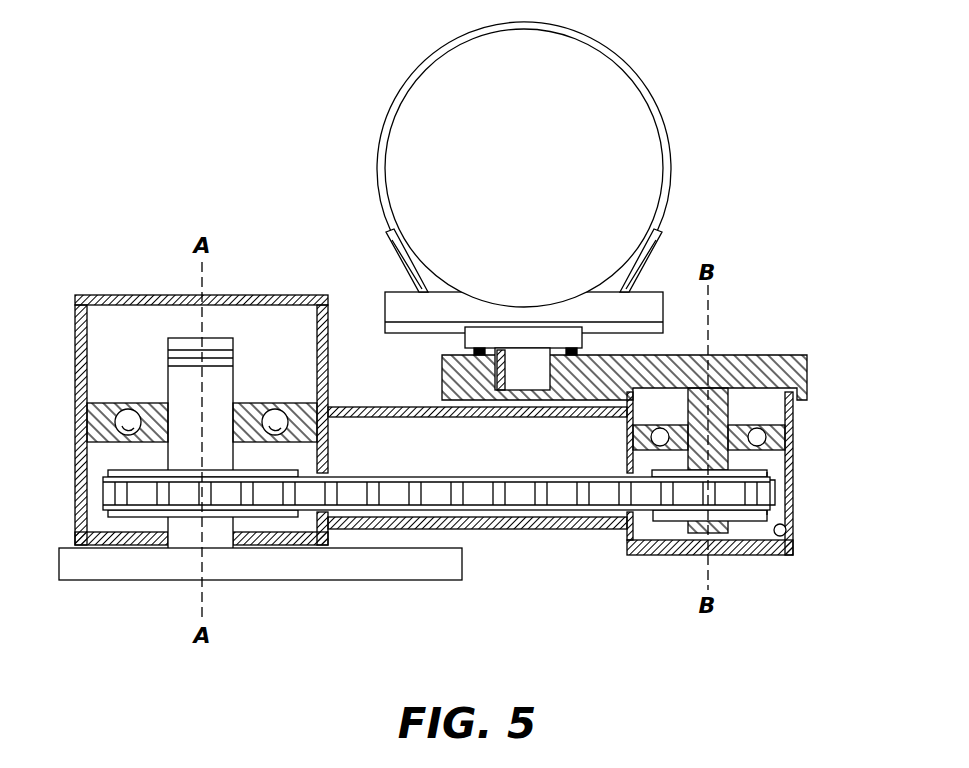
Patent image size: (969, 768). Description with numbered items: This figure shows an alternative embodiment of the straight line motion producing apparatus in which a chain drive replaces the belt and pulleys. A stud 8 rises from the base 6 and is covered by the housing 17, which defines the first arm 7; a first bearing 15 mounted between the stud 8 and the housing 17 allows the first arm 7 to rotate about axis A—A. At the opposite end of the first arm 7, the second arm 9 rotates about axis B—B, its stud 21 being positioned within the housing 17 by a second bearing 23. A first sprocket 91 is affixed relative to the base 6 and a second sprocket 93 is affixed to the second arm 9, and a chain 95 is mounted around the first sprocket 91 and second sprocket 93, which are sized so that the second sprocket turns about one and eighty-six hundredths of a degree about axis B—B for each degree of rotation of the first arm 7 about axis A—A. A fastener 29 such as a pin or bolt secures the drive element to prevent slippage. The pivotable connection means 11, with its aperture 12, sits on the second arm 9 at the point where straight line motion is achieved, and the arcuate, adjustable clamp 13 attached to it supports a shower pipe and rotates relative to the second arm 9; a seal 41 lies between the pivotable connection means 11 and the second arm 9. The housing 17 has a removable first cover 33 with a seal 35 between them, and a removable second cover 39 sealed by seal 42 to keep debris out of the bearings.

The base 6 is at (125, 568).
The first arm 7 is at (358, 410).
The stud 8 is at (222, 387).
The second arm 9 is at (790, 370).
The pivotable connection means 11 is at (488, 337).
The aperture 12 is at (492, 367).
The clamp 13 is at (665, 158).
The first bearing 15 is at (126, 408).
The housing 17 is at (75, 318).
The stud 21 is at (698, 408).
The second bearing 23 is at (740, 426).
The fastener 29 is at (775, 494).
The first cover 33 is at (264, 300).
The seal 35 is at (322, 300).
The second cover 39 is at (750, 550).
The seal 41 is at (578, 352).
The seal 42 is at (786, 532).
The first sprocket 91 is at (122, 470).
The second sprocket 93 is at (668, 522).
The chain 95 is at (540, 495).